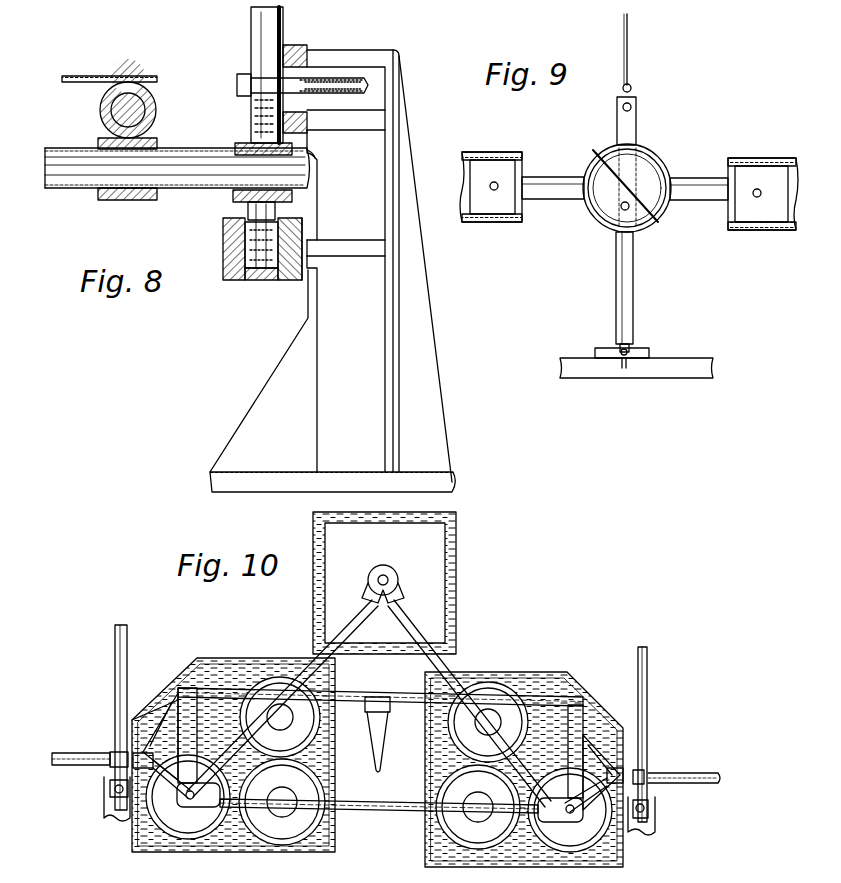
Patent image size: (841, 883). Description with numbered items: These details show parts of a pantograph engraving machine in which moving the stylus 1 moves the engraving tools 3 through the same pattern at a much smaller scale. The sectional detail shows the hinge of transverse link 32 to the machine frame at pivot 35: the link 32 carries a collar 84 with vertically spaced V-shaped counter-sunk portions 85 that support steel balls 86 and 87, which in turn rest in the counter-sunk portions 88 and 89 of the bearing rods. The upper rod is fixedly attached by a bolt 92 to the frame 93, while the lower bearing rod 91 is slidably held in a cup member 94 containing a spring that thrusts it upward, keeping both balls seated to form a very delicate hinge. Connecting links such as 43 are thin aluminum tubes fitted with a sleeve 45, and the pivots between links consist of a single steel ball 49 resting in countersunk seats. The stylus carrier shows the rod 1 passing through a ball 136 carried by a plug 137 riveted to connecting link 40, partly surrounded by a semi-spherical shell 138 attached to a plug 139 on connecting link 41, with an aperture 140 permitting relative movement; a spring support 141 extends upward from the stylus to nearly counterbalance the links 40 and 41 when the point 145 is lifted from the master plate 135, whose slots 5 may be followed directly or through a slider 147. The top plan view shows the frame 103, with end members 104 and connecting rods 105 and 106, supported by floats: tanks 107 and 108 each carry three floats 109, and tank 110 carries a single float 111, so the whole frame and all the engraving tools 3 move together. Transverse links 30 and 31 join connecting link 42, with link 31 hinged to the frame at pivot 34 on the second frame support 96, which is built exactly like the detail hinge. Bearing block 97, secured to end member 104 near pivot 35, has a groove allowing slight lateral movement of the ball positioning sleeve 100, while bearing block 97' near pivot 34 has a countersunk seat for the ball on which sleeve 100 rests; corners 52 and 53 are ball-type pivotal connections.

In FIG. 8, the transverse link 30 is at (284, 25).
In FIG. 8, the bolt 92 is at (305, 82).
In FIG. 8, the V-shaped counter-sunk portion 88 is at (260, 140).
In FIG. 8, the pivotal mounting 35 is at (243, 138).
In FIG. 10, the pivotal mounting 35 is at (650, 810).
In FIG. 8, the steel ball 87 is at (236, 148).
In FIG. 8, the V-shaped counter-sunk portions 85 is at (315, 160).
In FIG. 8, the steel ball 86 is at (276, 210).
In FIG. 8, the collar 84 is at (233, 197).
In FIG. 8, the V-shaped counter-sunk portion 89 is at (223, 230).
In FIG. 8, the bearing rod 91 is at (223, 268).
In FIG. 8, the cup member 94 is at (276, 280).
In FIG. 8, the frame 93 is at (304, 353).
In FIG. 10, the frame 93 is at (652, 832).
In FIG. 8, the connecting link 43 is at (128, 80).
In FIG. 10, the connecting link 43 is at (714, 782).
In FIG. 8, the sleeve 45 is at (100, 108).
In FIG. 8, the steel ball 49 is at (100, 143).
In FIG. 8, the transverse link 32 is at (68, 188).
In FIG. 10, the transverse link 32 is at (650, 684).
In FIG. 9, the spring support 141 is at (630, 50).
In FIG. 9, the aperture 140 is at (636, 125).
In FIG. 9, the semi-spherical shell 138 is at (658, 155).
In FIG. 9, the ball 136 is at (598, 212).
In FIG. 9, the plug 137 is at (520, 177).
In FIG. 9, the plug 139 is at (726, 210).
In FIG. 9, the connecting link 40 is at (488, 152).
In FIG. 9, the connecting link 41 is at (760, 158).
In FIG. 9, the stylus 1 is at (634, 290).
In FIG. 9, the point of the stylus 145 is at (631, 345).
In FIG. 9, the slider 147 is at (650, 356).
In FIG. 9, the master plate 135 is at (680, 378).
In FIG. 9, the slots 5 is at (622, 372).
In FIG. 10, the float 111 is at (432, 546).
In FIG. 10, the tank 110 is at (457, 580).
In FIG. 10, the connecting rod 106 is at (306, 660).
In FIG. 10, the tank 107 is at (320, 856).
In FIG. 10, the tank 108 is at (442, 856).
In FIG. 10, the floats 109 is at (379, 764).
In FIG. 10, the frame 103 is at (405, 692).
In FIG. 10, the end member 104 is at (180, 688).
In FIG. 10, the engraving tools 3 is at (381, 772).
In FIG. 10, the connecting rod 105 is at (397, 813).
In FIG. 10, the bearing block 97' is at (155, 727).
In FIG. 10, the lower bearing block 97 is at (616, 754).
In FIG. 10, the sleeve 100 is at (140, 770).
In FIG. 10, the transverse link 31 is at (115, 676).
In FIG. 10, the corner pivotal connection 53 is at (110, 754).
In FIG. 10, the corner pivotal connection 52 is at (652, 774).
In FIG. 10, the connecting link 42 is at (78, 758).
In FIG. 10, the pivotal mounting 34 is at (108, 790).
In FIG. 10, the second frame support 96 is at (106, 810).